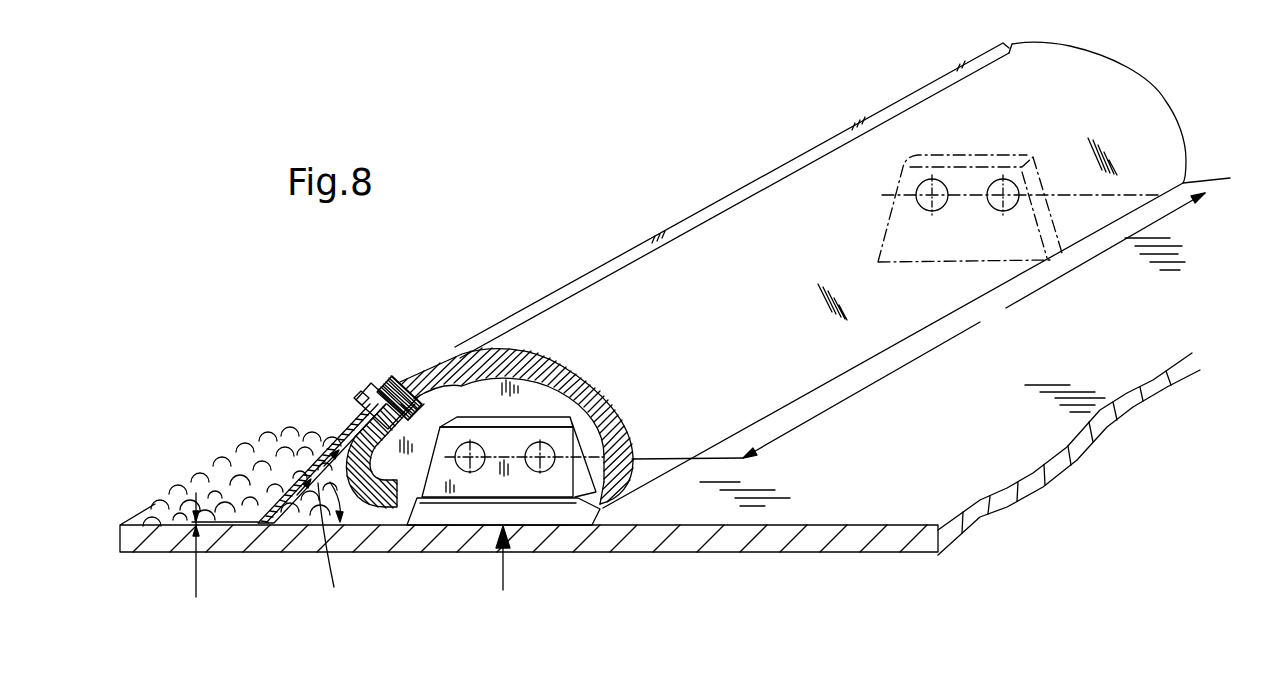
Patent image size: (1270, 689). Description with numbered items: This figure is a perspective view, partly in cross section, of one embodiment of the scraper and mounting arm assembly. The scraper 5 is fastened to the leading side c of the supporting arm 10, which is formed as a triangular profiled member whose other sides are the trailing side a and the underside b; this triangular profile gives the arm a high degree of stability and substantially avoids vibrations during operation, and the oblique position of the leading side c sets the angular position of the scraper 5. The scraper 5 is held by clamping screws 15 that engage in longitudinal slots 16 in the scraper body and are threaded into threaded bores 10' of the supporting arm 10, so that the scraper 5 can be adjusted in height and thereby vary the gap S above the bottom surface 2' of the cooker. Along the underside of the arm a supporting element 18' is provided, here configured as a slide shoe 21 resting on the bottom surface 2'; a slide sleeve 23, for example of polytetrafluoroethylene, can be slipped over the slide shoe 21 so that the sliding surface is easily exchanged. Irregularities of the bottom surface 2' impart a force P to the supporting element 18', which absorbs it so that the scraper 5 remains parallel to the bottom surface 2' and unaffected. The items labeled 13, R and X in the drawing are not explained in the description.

The bottom surface 2' is at (660, 454).
The supporting arm 10 is at (842, 275).
The threaded bores 10' is at (422, 353).
The spray cloud 13 is at (226, 464).
The clamping screws 15 is at (364, 407).
The longitudinal slots 16 is at (401, 380).
The supporting element 18' is at (498, 438).
The slide shoe 21 is at (548, 487).
The slide sleeve 23 is at (455, 515).
The scraper 5 is at (291, 514).
The trailing side a is at (607, 437).
The underside b is at (407, 493).
The leading side c is at (432, 392).
The force P is at (503, 574).
The gap S is at (182, 535).
The radius R is at (335, 547).
The feed direction X is at (918, 326).